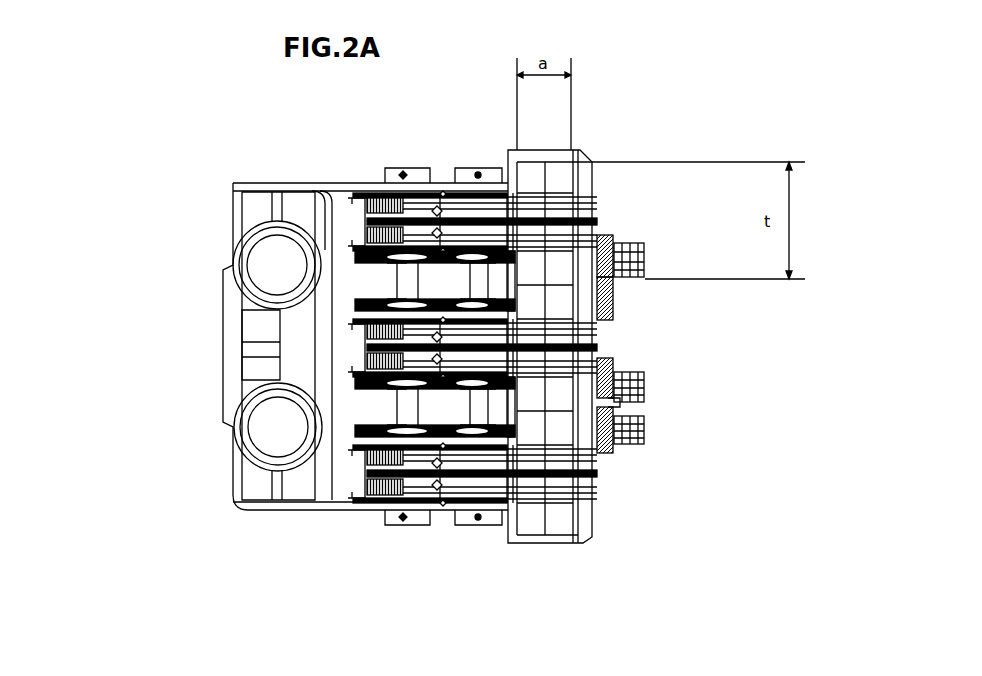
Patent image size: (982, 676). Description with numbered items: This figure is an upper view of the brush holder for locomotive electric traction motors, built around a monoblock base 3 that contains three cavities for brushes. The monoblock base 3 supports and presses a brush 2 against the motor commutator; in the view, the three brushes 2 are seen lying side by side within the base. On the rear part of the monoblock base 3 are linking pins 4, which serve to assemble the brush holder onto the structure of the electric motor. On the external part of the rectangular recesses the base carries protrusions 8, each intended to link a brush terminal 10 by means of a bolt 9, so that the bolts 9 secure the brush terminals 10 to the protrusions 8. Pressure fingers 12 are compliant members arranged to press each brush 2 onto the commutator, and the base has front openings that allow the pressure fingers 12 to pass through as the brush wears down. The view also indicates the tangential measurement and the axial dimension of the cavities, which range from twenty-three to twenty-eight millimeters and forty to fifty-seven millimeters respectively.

The brush 2 is at (580, 542).
The monoblock base 3 is at (240, 345).
The linking pin 4 is at (270, 266).
The protrusion 8 is at (600, 297).
The bolt 9 is at (645, 255).
The brush terminal 10 is at (607, 240).
The pressure finger 12 is at (492, 170).